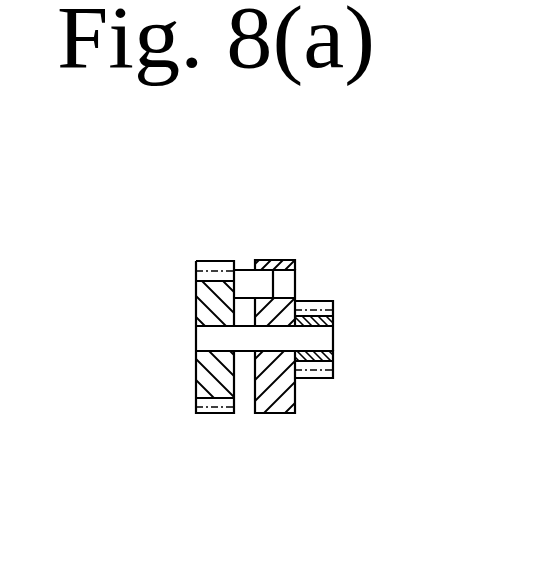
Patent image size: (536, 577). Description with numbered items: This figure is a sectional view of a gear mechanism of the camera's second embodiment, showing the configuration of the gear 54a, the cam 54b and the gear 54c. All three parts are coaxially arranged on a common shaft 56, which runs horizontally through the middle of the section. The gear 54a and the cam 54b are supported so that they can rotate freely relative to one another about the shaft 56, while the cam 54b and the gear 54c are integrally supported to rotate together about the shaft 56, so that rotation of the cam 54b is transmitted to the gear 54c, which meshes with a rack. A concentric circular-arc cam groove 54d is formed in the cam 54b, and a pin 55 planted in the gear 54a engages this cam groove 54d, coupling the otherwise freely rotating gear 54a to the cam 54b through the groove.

The gear 54a is at (210, 413).
The cam 54b is at (273, 413).
The gear 54c is at (322, 378).
The cam groove 54d is at (288, 270).
The pin 55 is at (250, 287).
The shaft 56 is at (195, 333).